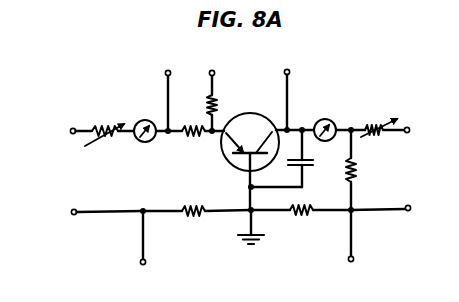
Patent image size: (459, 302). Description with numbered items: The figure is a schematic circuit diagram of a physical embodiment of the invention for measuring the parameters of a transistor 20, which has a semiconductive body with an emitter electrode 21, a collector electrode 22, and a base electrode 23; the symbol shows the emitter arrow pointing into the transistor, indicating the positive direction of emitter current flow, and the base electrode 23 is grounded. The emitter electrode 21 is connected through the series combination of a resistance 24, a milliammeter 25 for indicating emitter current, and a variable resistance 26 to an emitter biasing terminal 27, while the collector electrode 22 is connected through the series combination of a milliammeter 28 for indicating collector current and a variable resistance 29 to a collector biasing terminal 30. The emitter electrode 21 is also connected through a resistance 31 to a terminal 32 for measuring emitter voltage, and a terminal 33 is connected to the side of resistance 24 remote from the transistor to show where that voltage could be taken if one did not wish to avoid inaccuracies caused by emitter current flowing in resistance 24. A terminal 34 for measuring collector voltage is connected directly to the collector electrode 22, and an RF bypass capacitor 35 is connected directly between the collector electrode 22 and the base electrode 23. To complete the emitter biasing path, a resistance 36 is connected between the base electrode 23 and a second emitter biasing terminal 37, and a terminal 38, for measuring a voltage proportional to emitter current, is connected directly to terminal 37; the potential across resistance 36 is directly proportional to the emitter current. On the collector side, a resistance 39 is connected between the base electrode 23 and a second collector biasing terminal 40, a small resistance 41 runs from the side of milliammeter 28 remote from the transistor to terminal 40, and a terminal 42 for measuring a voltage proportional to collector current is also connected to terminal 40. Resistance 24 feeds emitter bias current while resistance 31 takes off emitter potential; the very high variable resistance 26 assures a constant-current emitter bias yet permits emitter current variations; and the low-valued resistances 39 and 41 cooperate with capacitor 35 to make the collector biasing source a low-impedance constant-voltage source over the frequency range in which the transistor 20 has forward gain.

The transistor 20 is at (262, 118).
The emitter electrode 21 is at (222, 151).
The collector electrode 22 is at (272, 158).
The base electrode 23 is at (239, 167).
The resistance 24 is at (191, 140).
The milliammeter 25 is at (147, 143).
The variable resistance 26 is at (106, 125).
The emitter biasing terminal 27 is at (70, 131).
The milliammeter 28 is at (320, 118).
The variable resistance 29 is at (372, 119).
The collector biasing terminal 30 is at (406, 134).
The resistance 31 is at (218, 110).
The terminal 32 is at (208, 73).
The terminal 33 is at (165, 73).
The terminal 34 is at (290, 73).
The RF bypass capacitor 35 is at (314, 163).
The resistance 36 is at (194, 222).
The second emitter biasing terminal 37 is at (71, 212).
The terminal 38 is at (140, 262).
The resistance 39 is at (303, 222).
The second collector biasing terminal 40 is at (406, 212).
The small resistance 41 is at (357, 174).
The terminal 42 is at (348, 259).